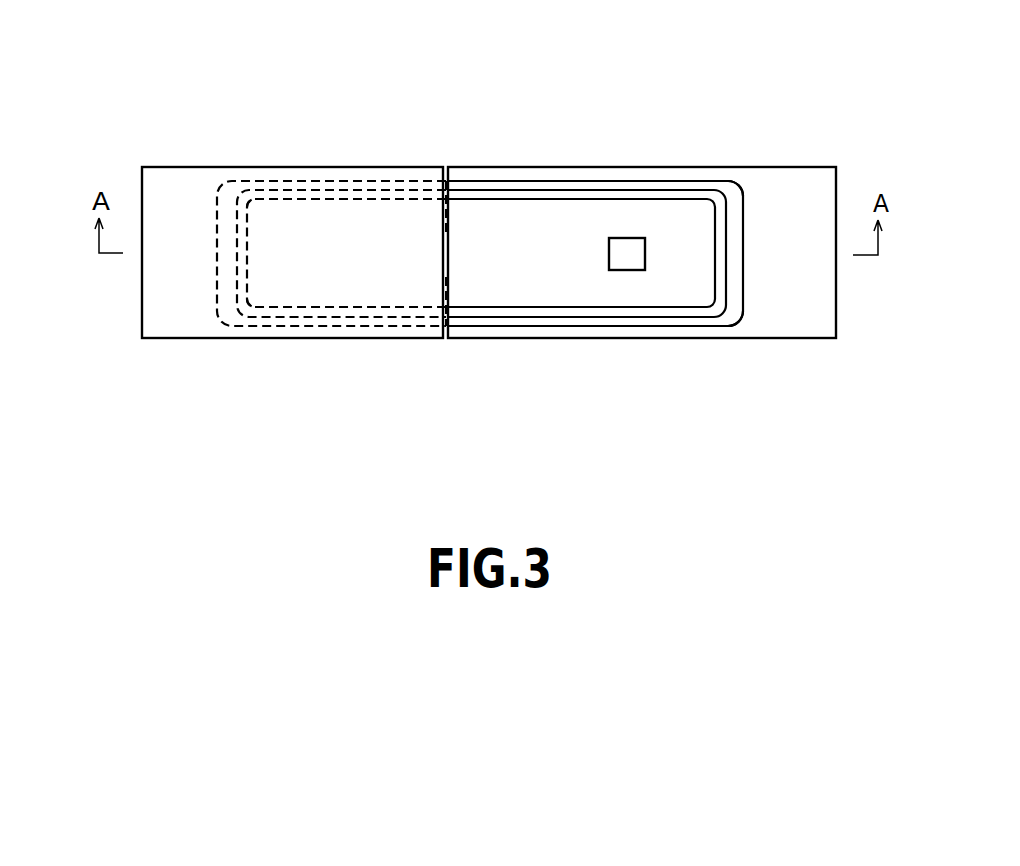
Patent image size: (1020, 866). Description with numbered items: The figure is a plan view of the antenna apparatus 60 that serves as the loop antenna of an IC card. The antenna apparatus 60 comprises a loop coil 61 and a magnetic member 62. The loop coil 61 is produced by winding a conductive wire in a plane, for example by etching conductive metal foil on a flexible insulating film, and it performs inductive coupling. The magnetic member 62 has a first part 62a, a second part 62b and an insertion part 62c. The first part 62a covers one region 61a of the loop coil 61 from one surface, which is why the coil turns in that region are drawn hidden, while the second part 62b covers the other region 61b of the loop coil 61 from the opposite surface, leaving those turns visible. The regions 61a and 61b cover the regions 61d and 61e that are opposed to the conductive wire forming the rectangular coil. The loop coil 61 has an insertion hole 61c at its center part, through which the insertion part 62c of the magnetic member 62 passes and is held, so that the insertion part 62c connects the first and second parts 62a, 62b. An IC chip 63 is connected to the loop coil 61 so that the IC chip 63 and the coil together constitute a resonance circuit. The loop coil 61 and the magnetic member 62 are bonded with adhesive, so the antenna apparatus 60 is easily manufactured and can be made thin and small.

The antenna apparatus 60 is at (587, 75).
The loop coil 61 is at (470, 183).
The one region of the loop coil 61a is at (342, 222).
The other region of the loop coil 61b is at (660, 222).
The insertion hole 61c is at (447, 255).
The region opposed to the conductive wire 61d is at (247, 238).
The region opposed to the conductive wire 61e is at (715, 235).
The magnetic member 62 is at (379, 287).
The first part 62a is at (182, 300).
The second part 62b is at (805, 315).
The insertion part 62c is at (425, 262).
The IC chip 63 is at (627, 270).